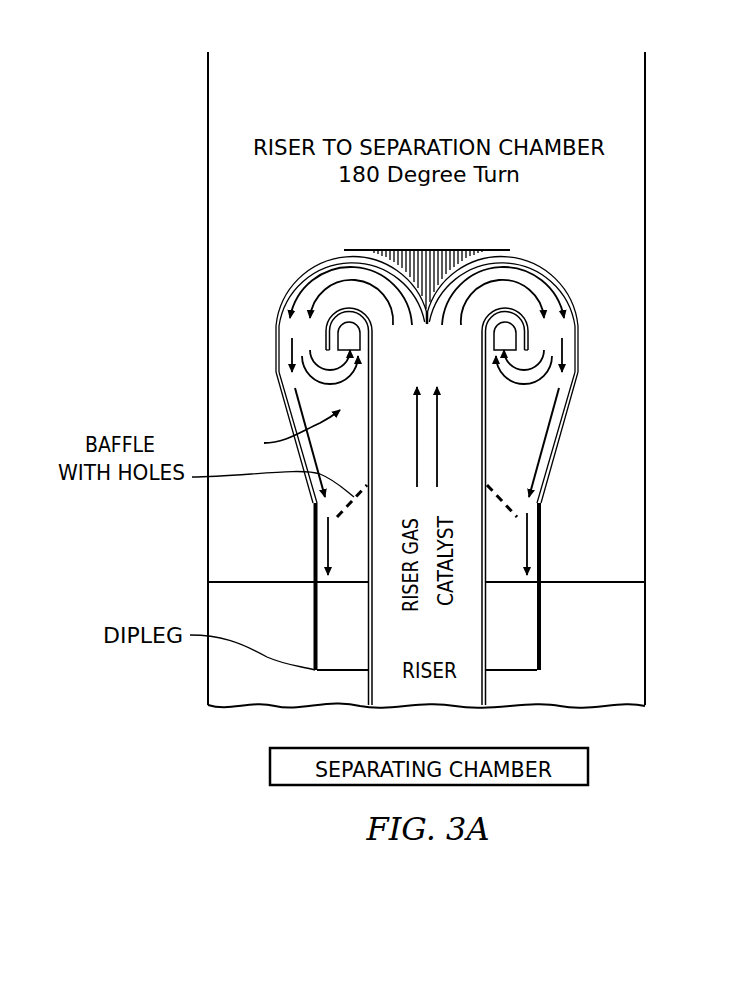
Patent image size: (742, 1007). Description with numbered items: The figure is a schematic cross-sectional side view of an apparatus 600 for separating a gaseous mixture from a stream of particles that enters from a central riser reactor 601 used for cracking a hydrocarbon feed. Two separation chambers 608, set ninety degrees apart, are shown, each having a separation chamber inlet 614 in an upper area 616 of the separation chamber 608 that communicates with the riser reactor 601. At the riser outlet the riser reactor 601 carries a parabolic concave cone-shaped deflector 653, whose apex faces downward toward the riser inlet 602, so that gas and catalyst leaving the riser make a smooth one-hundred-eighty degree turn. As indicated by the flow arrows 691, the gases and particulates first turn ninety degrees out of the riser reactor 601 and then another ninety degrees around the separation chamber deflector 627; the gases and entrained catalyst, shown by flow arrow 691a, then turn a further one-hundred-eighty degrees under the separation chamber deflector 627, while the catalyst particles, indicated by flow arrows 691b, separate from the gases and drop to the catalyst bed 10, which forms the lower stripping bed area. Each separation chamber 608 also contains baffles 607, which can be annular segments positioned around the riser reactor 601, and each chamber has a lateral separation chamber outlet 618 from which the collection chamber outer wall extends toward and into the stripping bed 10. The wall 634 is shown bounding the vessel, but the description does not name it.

The apparatus 600 is at (183, 233).
The separator vessel wall 634 is at (645, 240).
The catalyst bed 10 is at (233, 575).
The riser inlet 602 is at (457, 706).
The deflector 653 is at (413, 250).
The separation chamber deflector 627 is at (328, 337).
The riser reactor 601 is at (487, 423).
The lateral separation chamber outlet 618 is at (360, 338).
The flow arrows 691 is at (318, 276).
The separation chamber inlet 614 is at (500, 280).
The upper area 616 is at (527, 282).
The flow arrow 691a is at (320, 383).
The separation chamber 608 is at (297, 452).
The baffles 607 is at (502, 495).
The flow arrows 691b is at (542, 540).